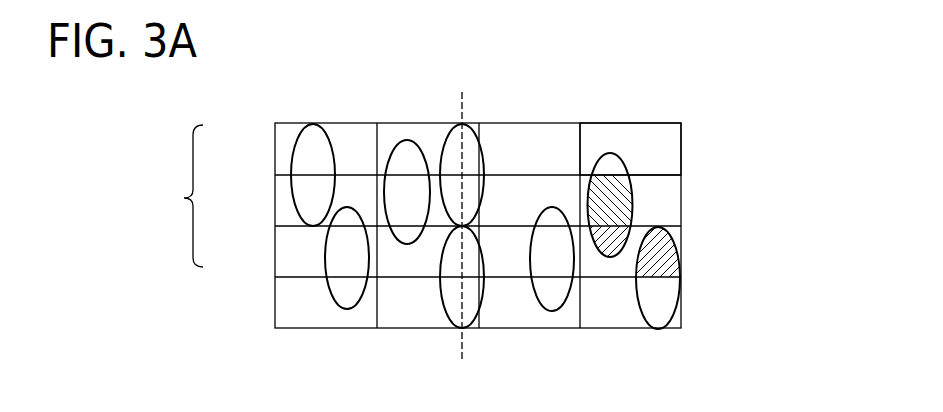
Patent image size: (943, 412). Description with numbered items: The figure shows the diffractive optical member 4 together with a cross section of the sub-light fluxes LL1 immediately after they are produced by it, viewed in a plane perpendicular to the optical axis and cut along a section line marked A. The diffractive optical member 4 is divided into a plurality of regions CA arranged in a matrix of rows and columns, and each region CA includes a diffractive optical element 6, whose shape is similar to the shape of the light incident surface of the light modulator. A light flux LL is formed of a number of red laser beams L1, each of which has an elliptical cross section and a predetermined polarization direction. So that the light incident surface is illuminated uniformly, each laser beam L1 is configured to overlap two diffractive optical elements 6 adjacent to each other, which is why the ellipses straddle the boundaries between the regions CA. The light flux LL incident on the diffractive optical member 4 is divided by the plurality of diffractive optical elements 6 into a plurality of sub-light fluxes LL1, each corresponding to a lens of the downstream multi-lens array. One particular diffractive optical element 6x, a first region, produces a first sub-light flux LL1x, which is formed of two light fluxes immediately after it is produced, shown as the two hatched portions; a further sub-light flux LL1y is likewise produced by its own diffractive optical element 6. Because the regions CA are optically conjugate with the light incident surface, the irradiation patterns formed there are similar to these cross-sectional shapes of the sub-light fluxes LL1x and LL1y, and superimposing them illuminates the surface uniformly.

The diffractive optical member 4 is at (667, 125).
The region CA is at (633, 143).
The diffractive optical element 6 is at (630, 149).
The diffractive optical element (first region) 6x is at (610, 263).
The section line A-A' A is at (464, 231).
The light flux LL is at (179, 196).
The laser beam L1 is at (297, 144).
The sub-light flux LL1 is at (660, 307).
The sub-light flux LL1y is at (628, 182).
The first sub-light flux LL1x is at (636, 231).